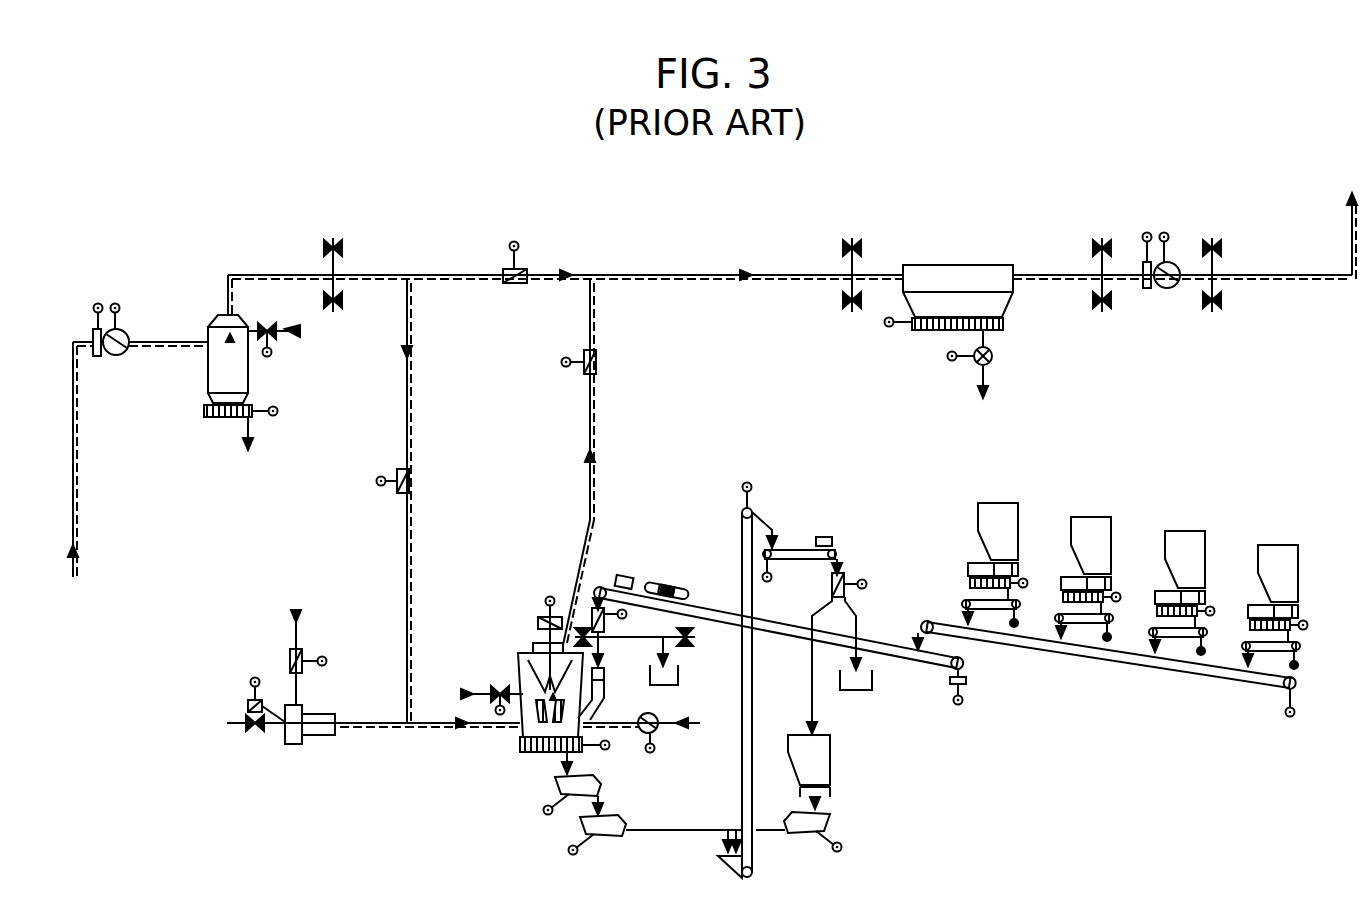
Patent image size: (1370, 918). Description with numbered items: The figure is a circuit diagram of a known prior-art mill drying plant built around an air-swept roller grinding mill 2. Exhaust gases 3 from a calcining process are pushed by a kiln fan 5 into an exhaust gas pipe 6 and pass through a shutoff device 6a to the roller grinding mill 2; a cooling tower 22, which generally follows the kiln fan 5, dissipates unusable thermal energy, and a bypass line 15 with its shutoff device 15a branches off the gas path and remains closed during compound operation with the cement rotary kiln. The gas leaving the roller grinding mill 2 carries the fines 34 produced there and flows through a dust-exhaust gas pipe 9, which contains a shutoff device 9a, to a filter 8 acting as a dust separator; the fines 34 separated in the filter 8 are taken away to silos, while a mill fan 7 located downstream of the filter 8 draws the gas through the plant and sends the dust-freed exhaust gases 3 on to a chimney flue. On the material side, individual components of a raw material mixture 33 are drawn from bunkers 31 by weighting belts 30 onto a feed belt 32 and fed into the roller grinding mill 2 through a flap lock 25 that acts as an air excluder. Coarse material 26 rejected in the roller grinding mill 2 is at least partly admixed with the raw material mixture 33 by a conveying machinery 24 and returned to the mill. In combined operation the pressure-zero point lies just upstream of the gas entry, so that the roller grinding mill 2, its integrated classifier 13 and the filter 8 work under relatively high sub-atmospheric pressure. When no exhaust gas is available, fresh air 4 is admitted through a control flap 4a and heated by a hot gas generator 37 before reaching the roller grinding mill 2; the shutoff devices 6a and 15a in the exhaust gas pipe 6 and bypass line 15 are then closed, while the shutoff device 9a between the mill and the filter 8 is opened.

The roller grinding mill 2 is at (532, 650).
The exhaust gases 3 is at (714, 369).
The fresh air 4 is at (296, 640).
The control flap 4a is at (290, 660).
The kiln fan 5 is at (121, 359).
The exhaust gas pipe 6 is at (412, 410).
The shutoff device 6a is at (412, 487).
The mill fan 7 is at (1170, 290).
The filter 8 is at (960, 277).
The dust-exhaust gas pipe 9 is at (598, 432).
The shutoff device 9a is at (600, 362).
The integrated classifier 13 is at (521, 677).
The bypass line 15 is at (455, 272).
The shutoff device 15a is at (530, 262).
The cooling tower 22 is at (250, 376).
The conveying machinery 24 is at (742, 760).
The flap lock 25 is at (606, 685).
The coarse material 26 is at (650, 833).
The weighting belts 30 is at (1003, 610).
The bunkers 31 is at (998, 517).
The feed belt 32 is at (898, 658).
The raw material mixture 33 is at (918, 628).
The fines 34 is at (987, 378).
The hot gas generator 37 is at (318, 726).